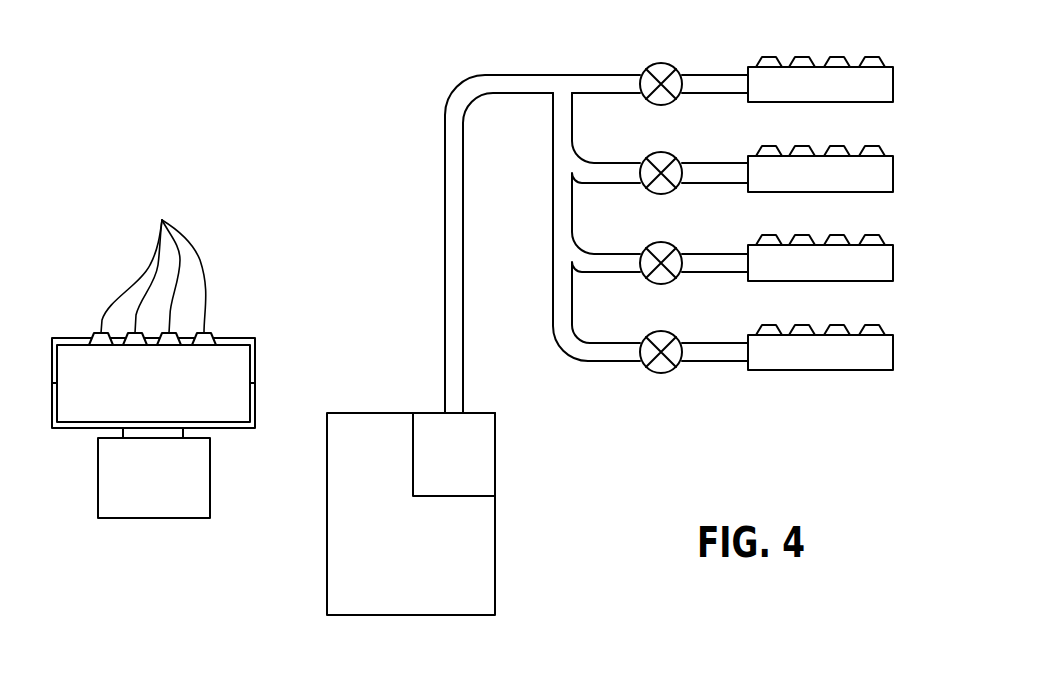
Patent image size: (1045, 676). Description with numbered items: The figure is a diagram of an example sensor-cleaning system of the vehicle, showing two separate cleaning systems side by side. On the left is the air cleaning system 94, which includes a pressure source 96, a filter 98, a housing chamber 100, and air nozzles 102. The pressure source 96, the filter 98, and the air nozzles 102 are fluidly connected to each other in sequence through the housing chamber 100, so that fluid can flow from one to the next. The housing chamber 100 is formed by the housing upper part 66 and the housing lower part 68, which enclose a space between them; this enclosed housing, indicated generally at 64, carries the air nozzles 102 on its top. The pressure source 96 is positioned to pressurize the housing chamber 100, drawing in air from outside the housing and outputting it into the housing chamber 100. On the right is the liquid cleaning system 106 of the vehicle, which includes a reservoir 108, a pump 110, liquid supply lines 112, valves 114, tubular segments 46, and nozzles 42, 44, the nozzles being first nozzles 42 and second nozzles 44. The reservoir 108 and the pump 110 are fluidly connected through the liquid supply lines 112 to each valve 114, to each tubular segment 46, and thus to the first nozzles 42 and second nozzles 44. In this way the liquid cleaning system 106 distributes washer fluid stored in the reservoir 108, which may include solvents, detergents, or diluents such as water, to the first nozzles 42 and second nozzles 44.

The first nozzles 42 is at (768, 57).
The second nozzles 44 is at (803, 57).
The tubular segments 46 is at (893, 173).
The controller 64 is at (264, 364).
The housing upper part 66 is at (236, 338).
The housing lower part 68 is at (257, 403).
The air cleaning system 94 is at (151, 538).
The pressure source 96 is at (210, 477).
The filter 98 is at (123, 432).
The housing chamber 100 is at (78, 360).
The air nozzles 102 is at (153, 262).
The liquid cleaning system 106 is at (643, 442).
The reservoir 108 is at (495, 552).
The pump 110 is at (495, 452).
The liquid supply lines 112 is at (520, 93).
The valves 114 is at (648, 153).